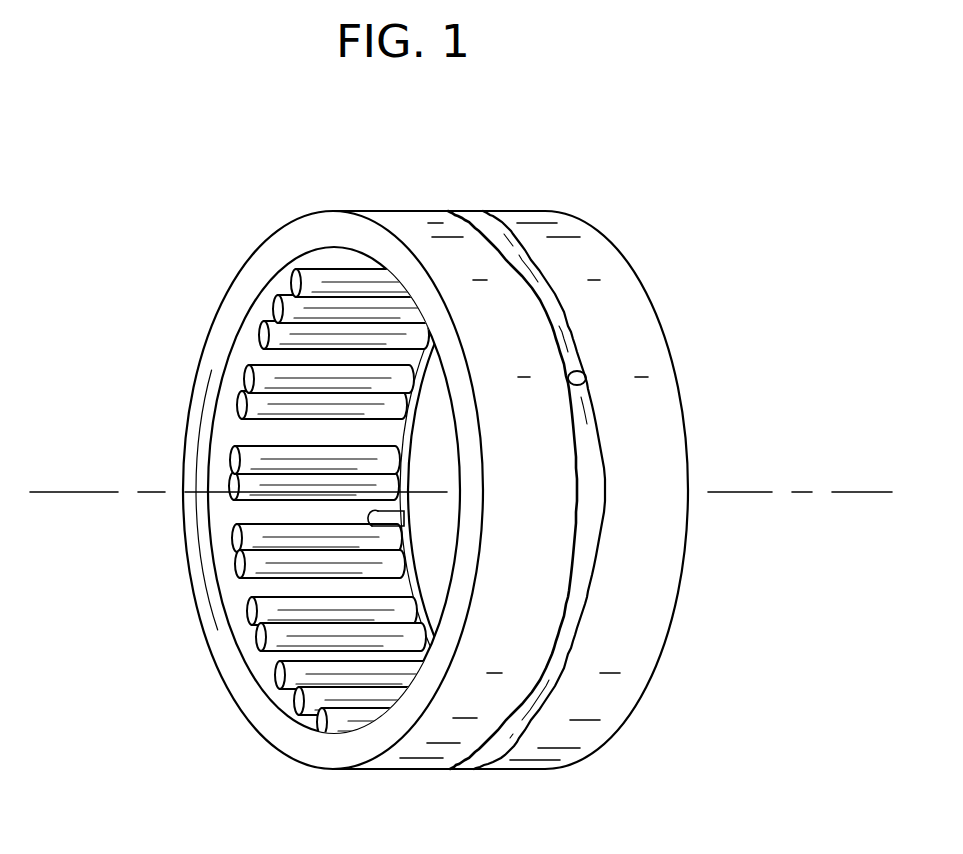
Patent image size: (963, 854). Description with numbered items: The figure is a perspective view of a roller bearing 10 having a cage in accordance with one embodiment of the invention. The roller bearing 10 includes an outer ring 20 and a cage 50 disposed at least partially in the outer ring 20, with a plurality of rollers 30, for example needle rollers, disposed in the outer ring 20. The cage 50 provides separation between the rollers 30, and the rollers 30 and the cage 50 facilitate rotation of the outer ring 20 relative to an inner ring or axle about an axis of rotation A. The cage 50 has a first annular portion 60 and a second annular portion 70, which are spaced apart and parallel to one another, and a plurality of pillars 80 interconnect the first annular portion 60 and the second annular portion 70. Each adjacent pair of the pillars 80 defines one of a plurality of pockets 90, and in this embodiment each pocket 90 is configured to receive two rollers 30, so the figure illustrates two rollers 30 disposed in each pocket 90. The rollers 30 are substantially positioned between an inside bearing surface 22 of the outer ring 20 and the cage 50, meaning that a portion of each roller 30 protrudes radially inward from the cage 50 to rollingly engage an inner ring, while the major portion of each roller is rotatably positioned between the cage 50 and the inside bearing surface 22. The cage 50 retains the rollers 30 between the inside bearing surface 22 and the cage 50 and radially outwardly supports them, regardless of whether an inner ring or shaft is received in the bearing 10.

The roller bearing 10 is at (490, 133).
The outer ring 20 is at (291, 238).
The inside bearing surface 22 is at (403, 539).
The rollers 30 is at (257, 567).
The cage 50 is at (243, 333).
The first annular portion 60 is at (215, 483).
The second annular portion 70 is at (402, 444).
The pillars 80 is at (278, 300).
The pockets 90 is at (248, 697).
The axis of rotation A is at (745, 492).